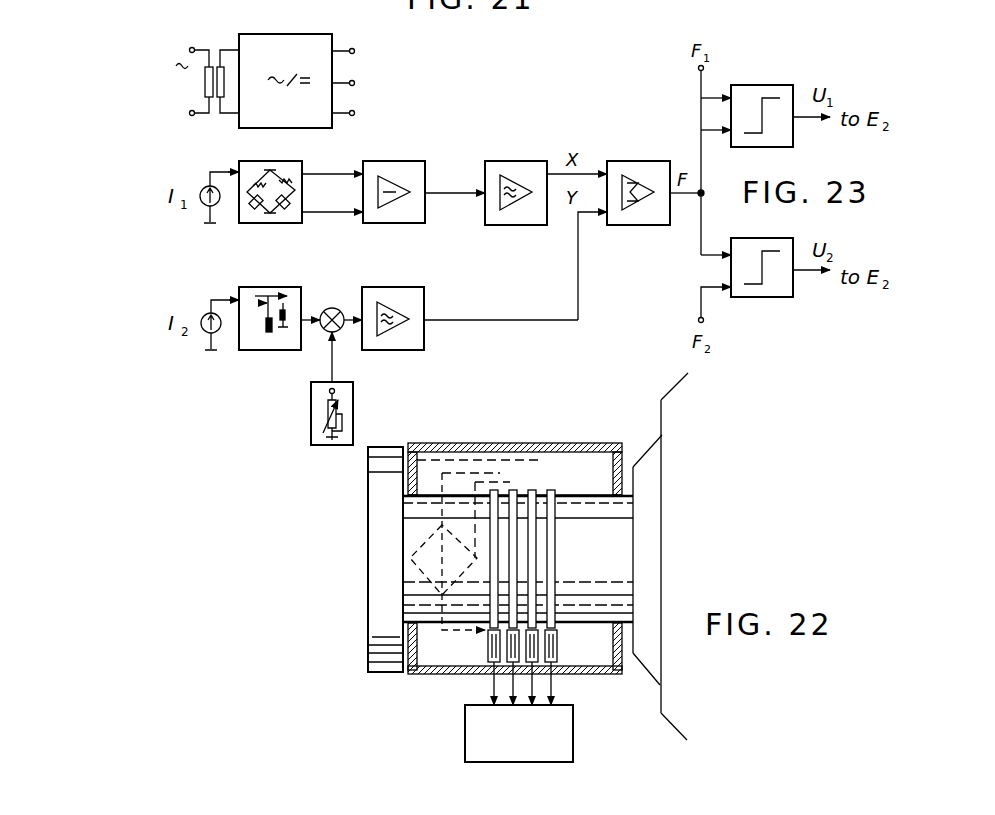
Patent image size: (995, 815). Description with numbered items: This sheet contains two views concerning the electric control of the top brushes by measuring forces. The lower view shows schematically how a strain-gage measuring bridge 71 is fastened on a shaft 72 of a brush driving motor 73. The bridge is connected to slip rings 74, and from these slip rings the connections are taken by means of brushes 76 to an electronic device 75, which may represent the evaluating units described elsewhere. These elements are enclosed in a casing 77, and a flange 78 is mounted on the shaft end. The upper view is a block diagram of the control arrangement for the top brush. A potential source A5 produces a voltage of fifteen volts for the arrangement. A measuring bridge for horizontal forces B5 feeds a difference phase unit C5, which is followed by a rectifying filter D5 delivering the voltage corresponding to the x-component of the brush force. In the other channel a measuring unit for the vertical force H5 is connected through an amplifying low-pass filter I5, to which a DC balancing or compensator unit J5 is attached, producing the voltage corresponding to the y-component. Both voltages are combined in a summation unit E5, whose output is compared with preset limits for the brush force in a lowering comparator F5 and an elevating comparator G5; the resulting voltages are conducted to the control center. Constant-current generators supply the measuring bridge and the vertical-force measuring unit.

In FIG. 22, the strain-gage measuring bridge 71 is at (427, 563).
In FIG. 22, the shaft 72 is at (420, 528).
In FIG. 22, the motor 73 is at (680, 420).
In FIG. 22, the slip rings 74 is at (500, 484).
In FIG. 22, the electronic device 75 is at (485, 735).
In FIG. 22, the brushes 76 is at (557, 650).
In FIG. 22, the casing 77 is at (457, 445).
In FIG. 22, the flange 78 is at (373, 643).
In FIG. 23, the potential source A5 is at (287, 66).
In FIG. 23, the measuring bridge for horizontal forces B5 is at (270, 206).
In FIG. 22, the measuring bridge for horizontal forces B5 is at (672, 503).
In FIG. 23, the difference phase unit C5 is at (394, 206).
In FIG. 23, the rectifying filter D5 is at (516, 208).
In FIG. 23, the summation unit E5 is at (638, 208).
In FIG. 23, the lowering comparator F5 is at (762, 101).
In FIG. 23, the elevating comparator G5 is at (762, 286).
In FIG. 23, the measuring unit for the vertical force H5 is at (270, 338).
In FIG. 23, the amplifying low-pass filter I5 is at (393, 334).
In FIG. 23, the DC balancing or compensator unit J5 is at (305, 413).